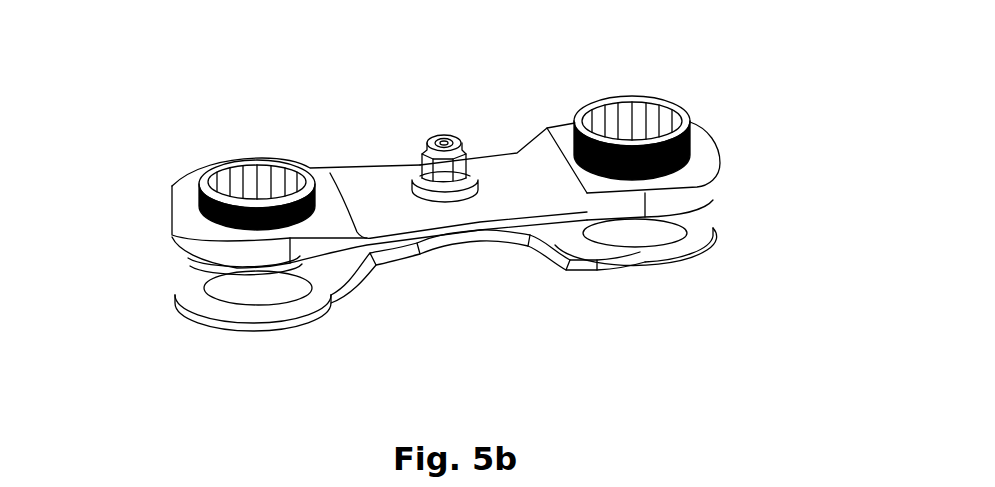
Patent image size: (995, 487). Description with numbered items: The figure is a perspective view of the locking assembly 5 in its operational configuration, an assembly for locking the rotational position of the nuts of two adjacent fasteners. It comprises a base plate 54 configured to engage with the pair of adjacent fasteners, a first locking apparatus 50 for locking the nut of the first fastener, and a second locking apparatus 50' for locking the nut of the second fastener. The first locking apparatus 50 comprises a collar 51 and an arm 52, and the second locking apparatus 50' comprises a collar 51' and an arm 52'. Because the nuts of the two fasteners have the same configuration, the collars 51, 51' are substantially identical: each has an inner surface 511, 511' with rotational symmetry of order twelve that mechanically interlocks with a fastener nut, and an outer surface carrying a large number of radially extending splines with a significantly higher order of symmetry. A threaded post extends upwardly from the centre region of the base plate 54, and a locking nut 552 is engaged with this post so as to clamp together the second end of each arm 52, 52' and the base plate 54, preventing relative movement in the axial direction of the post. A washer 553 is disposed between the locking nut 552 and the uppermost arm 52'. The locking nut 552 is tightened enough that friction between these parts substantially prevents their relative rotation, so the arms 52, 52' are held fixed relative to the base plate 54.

The locking assembly 5 is at (276, 40).
The second locking apparatus 50' is at (321, 174).
The collar 51' is at (188, 186).
The inner surface 511' is at (241, 149).
The arm 52' is at (321, 213).
The first locking apparatus 50 is at (639, 110).
The collar 51 is at (688, 138).
The inner surface 511 is at (664, 83).
The arm 52 is at (639, 171).
The locking nut 552 is at (423, 145).
The washer 553 is at (470, 176).
The base plate 54 is at (591, 264).